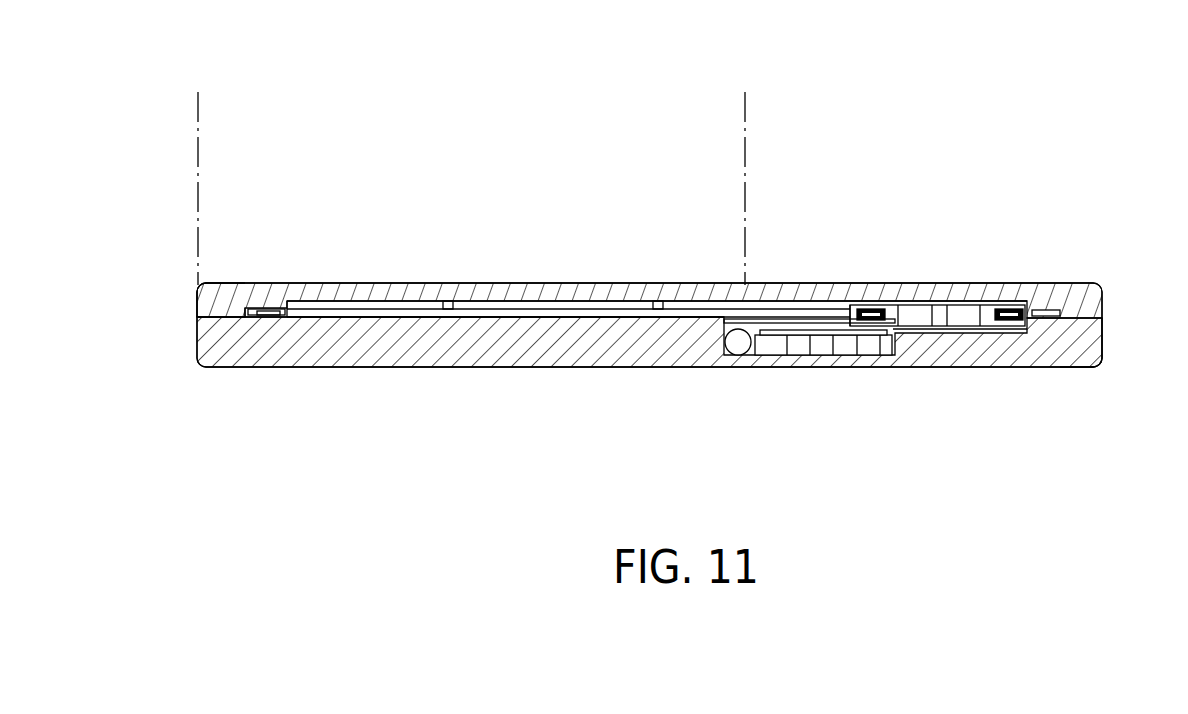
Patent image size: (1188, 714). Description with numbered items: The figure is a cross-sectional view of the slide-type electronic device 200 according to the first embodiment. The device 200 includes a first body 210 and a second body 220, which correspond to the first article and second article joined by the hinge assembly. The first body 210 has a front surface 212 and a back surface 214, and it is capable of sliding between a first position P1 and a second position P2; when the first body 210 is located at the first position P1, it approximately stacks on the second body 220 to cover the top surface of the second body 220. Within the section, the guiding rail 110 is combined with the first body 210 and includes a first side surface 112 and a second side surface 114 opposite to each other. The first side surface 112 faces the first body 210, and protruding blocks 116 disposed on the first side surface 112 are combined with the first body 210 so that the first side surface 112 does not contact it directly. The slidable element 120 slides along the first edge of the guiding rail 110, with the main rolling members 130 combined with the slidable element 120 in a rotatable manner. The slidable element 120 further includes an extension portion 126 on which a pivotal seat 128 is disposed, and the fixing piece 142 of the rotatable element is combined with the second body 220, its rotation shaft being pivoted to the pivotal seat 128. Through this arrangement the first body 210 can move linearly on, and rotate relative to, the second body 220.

The slide-type electronic device 200 is at (926, 117).
The first position P1 is at (201, 173).
The second position P2 is at (748, 173).
The first body 210 is at (1090, 291).
The front surface 212 is at (233, 283).
The back surface 214 is at (1088, 320).
The second body 220 is at (210, 342).
The guiding rail 110 is at (285, 307).
The first side surface 112 is at (497, 307).
The second side surface 114 is at (423, 319).
The protruding blocks 116 is at (570, 302).
The slidable element 120 is at (990, 305).
The extension portion 126 is at (760, 321).
The pivotal seat 128 is at (742, 345).
The main rolling members 130 is at (873, 308).
The fixing piece 142 is at (828, 333).